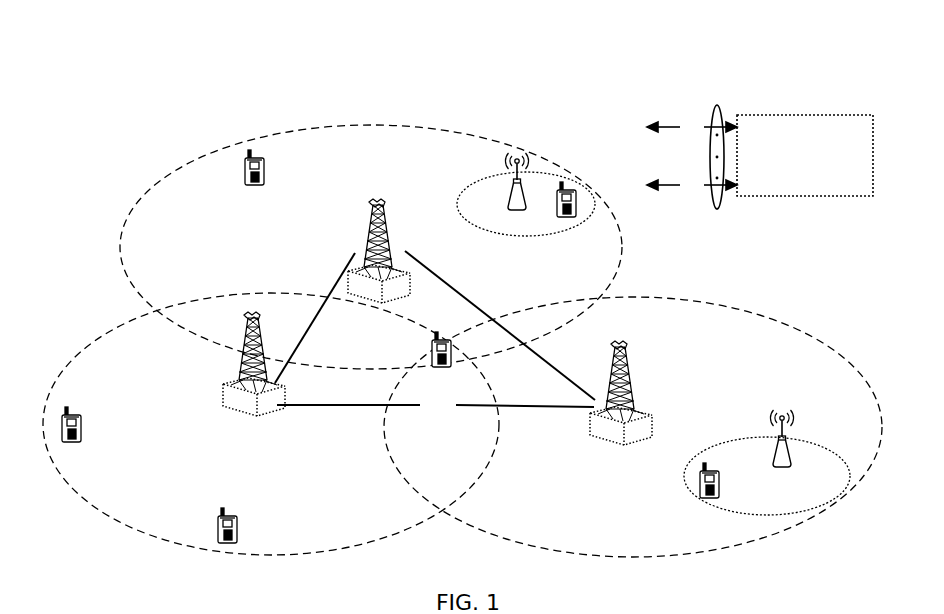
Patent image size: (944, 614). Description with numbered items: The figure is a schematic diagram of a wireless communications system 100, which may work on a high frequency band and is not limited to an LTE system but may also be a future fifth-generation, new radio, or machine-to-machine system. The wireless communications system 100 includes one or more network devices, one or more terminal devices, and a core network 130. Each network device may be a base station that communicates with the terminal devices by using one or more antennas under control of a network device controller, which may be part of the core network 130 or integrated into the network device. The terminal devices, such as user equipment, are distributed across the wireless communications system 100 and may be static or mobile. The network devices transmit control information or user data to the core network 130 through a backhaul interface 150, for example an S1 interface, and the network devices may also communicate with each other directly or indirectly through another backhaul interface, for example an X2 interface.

The wireless communications system 100 is at (866, 38).
The core network 130 is at (822, 114).
The backhaul interface 150 is at (719, 104).